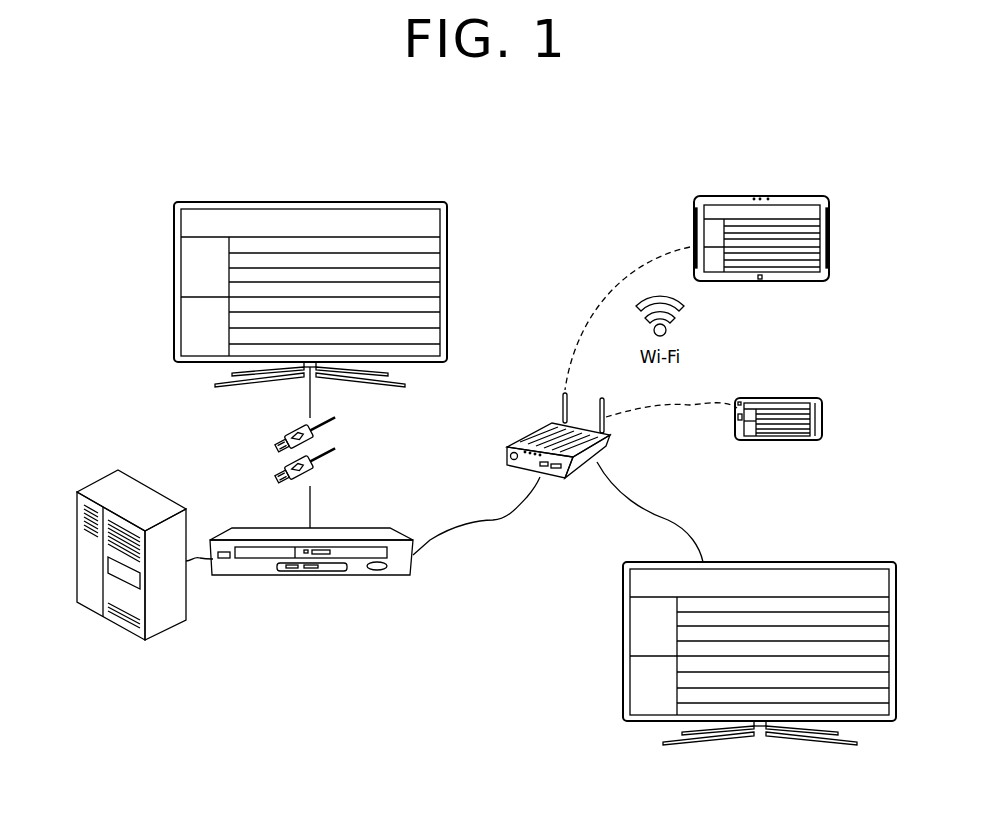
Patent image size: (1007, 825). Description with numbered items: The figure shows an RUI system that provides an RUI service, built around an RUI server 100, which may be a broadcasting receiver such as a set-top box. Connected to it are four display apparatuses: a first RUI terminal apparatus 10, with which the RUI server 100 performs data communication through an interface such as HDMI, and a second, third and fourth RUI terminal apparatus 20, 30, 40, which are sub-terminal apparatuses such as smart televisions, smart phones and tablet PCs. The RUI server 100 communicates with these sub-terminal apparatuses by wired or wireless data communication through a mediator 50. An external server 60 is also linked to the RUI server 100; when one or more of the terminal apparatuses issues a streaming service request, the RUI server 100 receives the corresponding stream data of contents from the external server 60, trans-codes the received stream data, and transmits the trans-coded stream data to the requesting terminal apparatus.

The first RUI terminal apparatus 10 is at (370, 202).
The second RUI terminal apparatus 20 is at (818, 562).
The third RUI terminal apparatus 30 is at (815, 196).
The fourth RUI terminal apparatus 40 is at (775, 398).
The mediator 50 is at (507, 452).
The external server 60 is at (117, 470).
The RUI server 100 is at (375, 527).